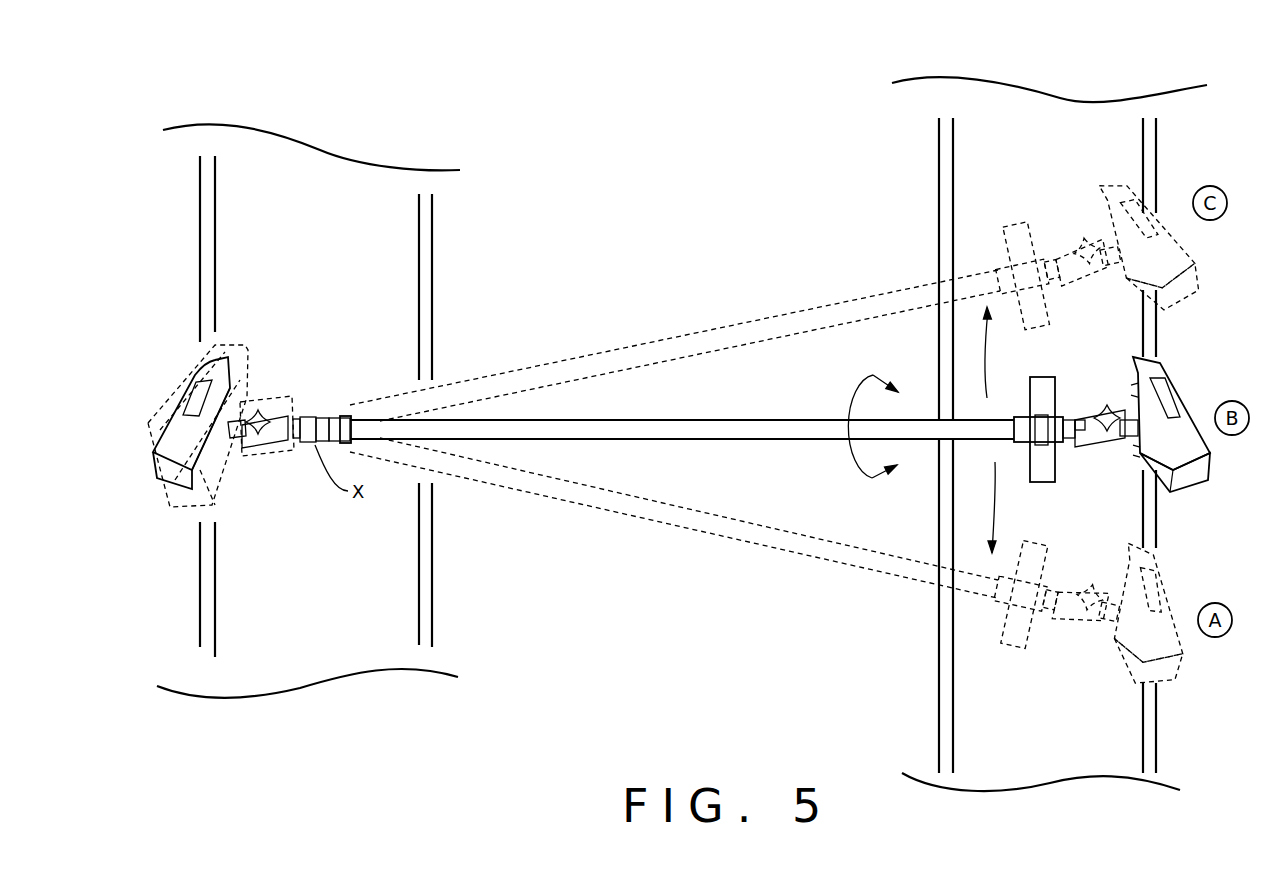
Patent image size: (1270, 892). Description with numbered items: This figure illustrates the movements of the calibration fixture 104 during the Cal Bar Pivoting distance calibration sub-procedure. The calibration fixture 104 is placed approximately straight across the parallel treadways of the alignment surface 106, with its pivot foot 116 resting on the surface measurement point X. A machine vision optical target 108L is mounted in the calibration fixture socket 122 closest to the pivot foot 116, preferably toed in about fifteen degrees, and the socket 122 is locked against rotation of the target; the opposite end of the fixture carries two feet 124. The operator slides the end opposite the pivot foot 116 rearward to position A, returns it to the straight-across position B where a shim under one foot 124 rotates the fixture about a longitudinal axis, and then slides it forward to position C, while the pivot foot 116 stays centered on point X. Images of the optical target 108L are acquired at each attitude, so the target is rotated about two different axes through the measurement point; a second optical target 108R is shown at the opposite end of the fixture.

The calibration fixture 104 is at (697, 417).
The alignment surface 106 is at (336, 212).
The machine vision optical target 108L is at (170, 383).
The right wheel 108R is at (1192, 385).
The pivot foot 116 is at (312, 450).
The calibration fixture socket 122 is at (285, 430).
The fixture feet 124 is at (1058, 392).